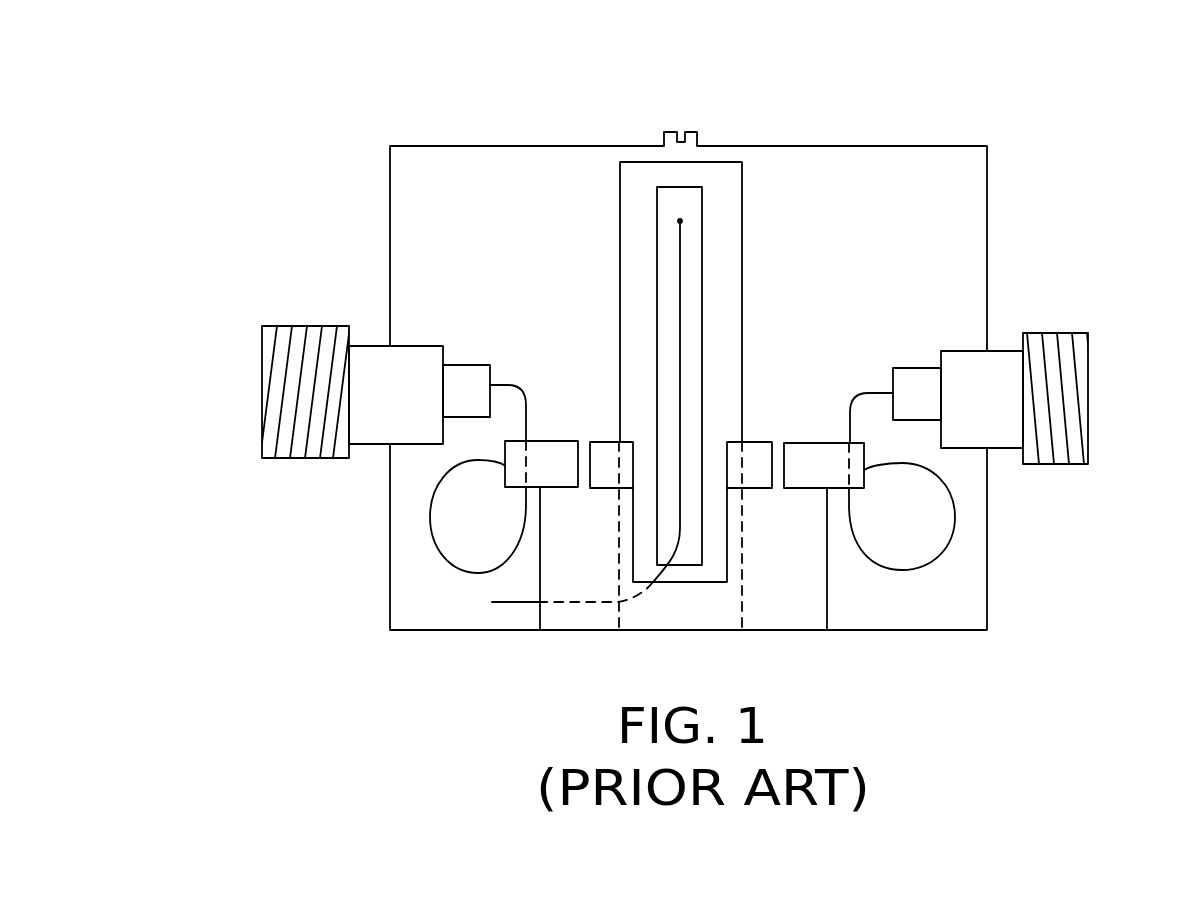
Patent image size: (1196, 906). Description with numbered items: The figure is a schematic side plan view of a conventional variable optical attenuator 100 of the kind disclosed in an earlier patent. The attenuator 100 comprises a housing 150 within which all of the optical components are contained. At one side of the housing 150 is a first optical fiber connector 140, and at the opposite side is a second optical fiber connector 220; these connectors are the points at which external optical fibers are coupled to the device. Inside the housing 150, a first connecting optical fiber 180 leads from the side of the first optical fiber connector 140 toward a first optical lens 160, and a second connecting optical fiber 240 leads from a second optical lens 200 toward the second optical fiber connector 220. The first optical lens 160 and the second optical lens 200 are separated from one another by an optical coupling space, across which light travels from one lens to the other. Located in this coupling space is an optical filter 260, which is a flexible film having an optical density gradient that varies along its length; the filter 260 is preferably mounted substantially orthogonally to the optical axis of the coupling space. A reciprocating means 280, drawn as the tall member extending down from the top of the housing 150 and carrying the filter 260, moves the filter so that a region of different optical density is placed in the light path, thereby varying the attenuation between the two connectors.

The variable optical attenuator 100 is at (1116, 91).
The first optical fiber connector 140 is at (312, 326).
The housing 150 is at (987, 533).
The first optical lens 160 is at (602, 442).
The first connecting optical fiber 180 is at (443, 562).
The second optical lens 200 is at (760, 442).
The second optical fiber connector 220 is at (1051, 339).
The second connecting optical fiber 240 is at (928, 568).
The optical filter 260 is at (682, 314).
The reciprocating means 280 is at (743, 243).